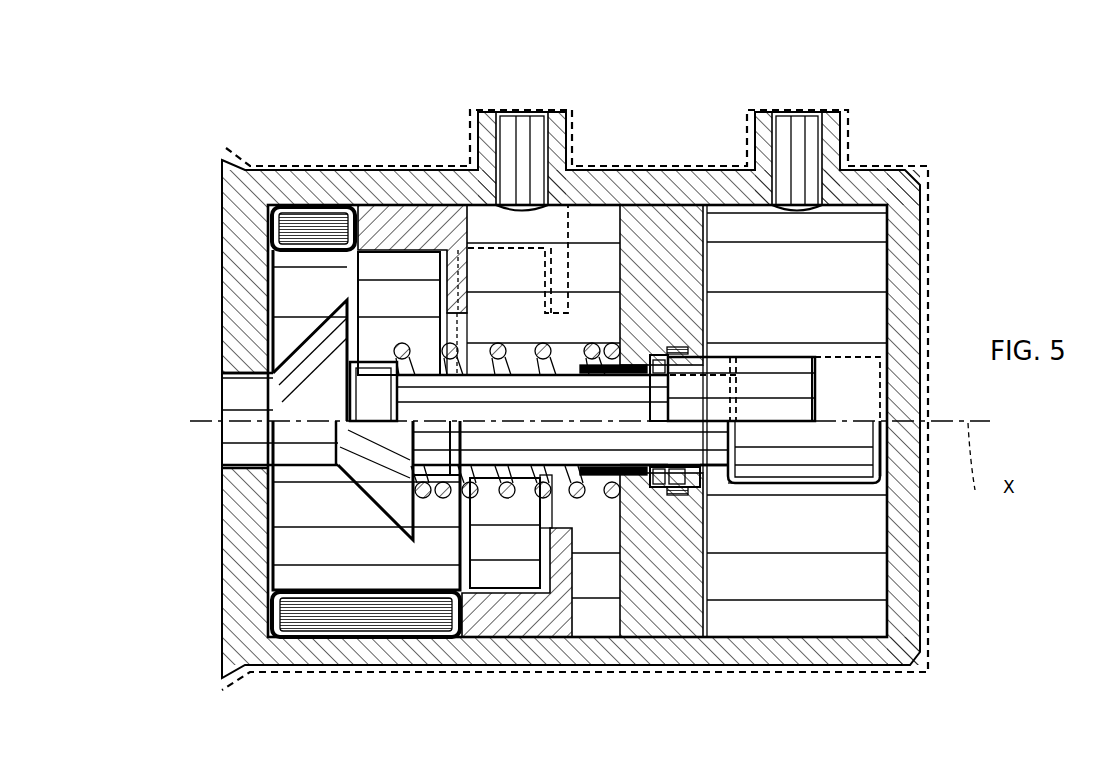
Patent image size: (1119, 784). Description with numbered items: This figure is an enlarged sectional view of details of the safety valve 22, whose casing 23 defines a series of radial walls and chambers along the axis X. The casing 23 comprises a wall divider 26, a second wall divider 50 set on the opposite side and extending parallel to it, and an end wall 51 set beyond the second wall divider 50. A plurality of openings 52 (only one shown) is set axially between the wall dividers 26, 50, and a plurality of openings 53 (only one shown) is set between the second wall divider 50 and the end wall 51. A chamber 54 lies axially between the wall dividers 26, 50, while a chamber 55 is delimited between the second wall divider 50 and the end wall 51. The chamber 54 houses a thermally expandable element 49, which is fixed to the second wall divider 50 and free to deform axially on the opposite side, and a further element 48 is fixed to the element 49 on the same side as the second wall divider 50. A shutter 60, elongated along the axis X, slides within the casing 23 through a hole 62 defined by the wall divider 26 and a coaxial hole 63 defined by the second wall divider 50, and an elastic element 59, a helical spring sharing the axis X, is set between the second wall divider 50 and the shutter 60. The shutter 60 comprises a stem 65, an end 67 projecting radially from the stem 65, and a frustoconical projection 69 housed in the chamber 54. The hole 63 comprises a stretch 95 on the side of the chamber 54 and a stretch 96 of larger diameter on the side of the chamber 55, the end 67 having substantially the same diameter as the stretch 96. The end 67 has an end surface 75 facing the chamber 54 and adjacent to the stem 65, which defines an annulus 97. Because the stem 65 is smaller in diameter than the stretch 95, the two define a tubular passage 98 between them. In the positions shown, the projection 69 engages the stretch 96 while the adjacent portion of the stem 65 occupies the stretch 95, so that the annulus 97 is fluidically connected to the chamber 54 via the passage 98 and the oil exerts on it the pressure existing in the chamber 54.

The valve 22 is at (1005, 180).
The casing 23 is at (507, 655).
The wall divider 26 is at (240, 202).
The further element 48 is at (410, 220).
The thermally expandable element 49 is at (303, 222).
The second wall divider 50 is at (657, 215).
The end wall 51 is at (900, 266).
The opening 52 is at (506, 128).
The opening 53 is at (780, 128).
The chamber 54 is at (296, 582).
The chamber 55 is at (860, 208).
The elastic element 59 is at (497, 348).
The shutter 60 is at (814, 490).
The hole 62 is at (242, 374).
The hole 63 is at (704, 366).
The stem 65 is at (622, 410).
The end 67 is at (835, 453).
The projection 69 is at (377, 482).
The end surface 75 is at (716, 502).
The stretch 95 is at (628, 466).
The stretch 96 is at (692, 478).
The annulus 97 is at (724, 483).
The tubular passage 98 is at (598, 378).